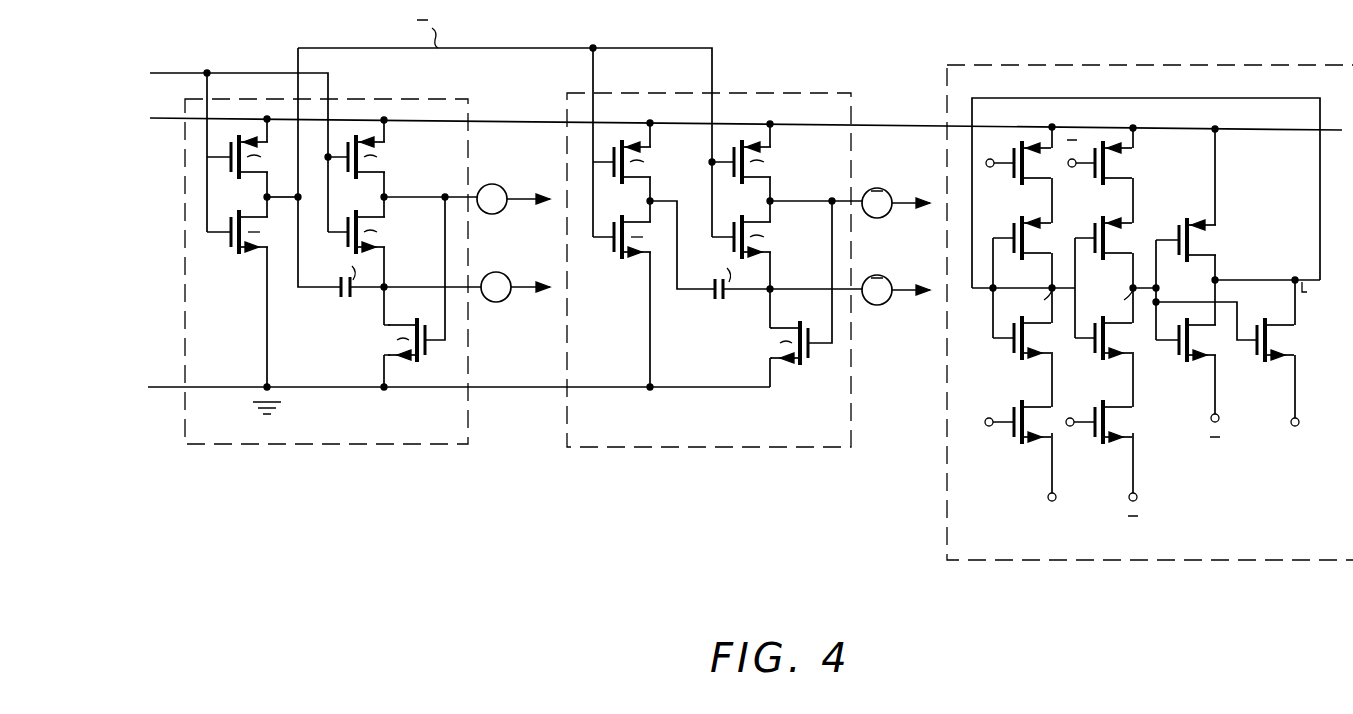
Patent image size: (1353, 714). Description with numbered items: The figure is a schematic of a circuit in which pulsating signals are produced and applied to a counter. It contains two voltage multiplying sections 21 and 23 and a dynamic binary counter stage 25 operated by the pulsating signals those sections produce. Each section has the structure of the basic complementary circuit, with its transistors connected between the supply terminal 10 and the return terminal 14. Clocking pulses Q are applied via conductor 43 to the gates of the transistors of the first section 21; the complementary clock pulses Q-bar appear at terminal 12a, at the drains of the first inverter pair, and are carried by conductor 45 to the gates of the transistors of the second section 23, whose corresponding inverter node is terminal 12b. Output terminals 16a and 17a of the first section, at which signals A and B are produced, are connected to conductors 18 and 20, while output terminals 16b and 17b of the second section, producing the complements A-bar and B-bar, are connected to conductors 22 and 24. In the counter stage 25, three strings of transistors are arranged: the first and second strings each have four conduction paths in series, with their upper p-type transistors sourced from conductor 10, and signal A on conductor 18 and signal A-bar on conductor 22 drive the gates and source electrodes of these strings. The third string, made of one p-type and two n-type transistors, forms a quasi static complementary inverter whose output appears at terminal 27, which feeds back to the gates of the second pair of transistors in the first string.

The terminal 10 is at (178, 119).
The terminal 12a is at (267, 197).
The terminal 12b is at (652, 201).
The terminal 14 is at (168, 387).
The output terminal 16a is at (396, 185).
The output terminal 16b is at (772, 201).
The output terminal 17a is at (394, 265).
The output terminal 17b is at (779, 267).
The conductor 18 is at (523, 176).
The conductor 20 is at (527, 264).
The voltage multiplying section 21 is at (392, 445).
The conductor 22 is at (905, 201).
The voltage multiplying section 23 is at (713, 440).
The conductor 24 is at (905, 289).
The dynamic binary counter stage 25 is at (958, 488).
The terminal 27 is at (1293, 280).
The conductor 43 is at (200, 73).
The conductor 45 is at (521, 48).